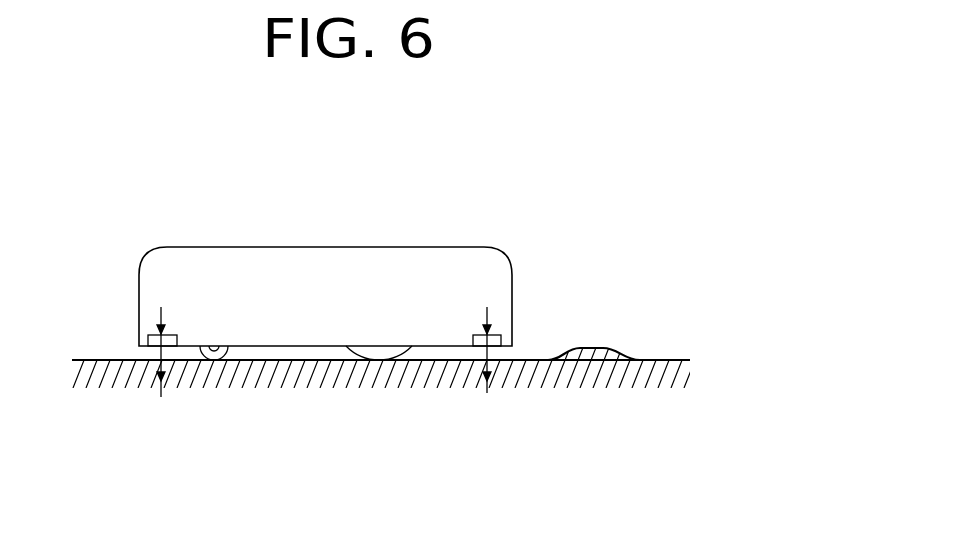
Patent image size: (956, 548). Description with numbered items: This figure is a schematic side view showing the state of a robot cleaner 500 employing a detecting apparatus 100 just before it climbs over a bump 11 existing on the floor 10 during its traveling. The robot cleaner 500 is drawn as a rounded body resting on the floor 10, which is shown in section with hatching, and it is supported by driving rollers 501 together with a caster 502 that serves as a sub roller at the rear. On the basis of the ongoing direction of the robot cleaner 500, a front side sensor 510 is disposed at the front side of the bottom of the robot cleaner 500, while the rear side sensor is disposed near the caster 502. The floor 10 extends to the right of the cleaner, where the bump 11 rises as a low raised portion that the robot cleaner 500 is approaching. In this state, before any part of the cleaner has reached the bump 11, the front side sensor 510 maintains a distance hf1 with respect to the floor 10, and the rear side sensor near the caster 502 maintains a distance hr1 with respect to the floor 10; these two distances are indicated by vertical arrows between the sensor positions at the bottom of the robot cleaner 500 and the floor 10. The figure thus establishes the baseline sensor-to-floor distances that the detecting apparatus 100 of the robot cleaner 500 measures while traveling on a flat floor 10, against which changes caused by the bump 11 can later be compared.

The floor 10 is at (670, 362).
The bump 11 is at (588, 348).
The detecting apparatus 100 is at (146, 346).
The robot cleaner 500 is at (328, 262).
The driving rollers 501 is at (374, 356).
The caster 502 is at (223, 355).
The front side sensor 510 is at (477, 346).
The distance of rear side sensor hr1 is at (165, 363).
The distance of front side sensor hf1 is at (488, 365).